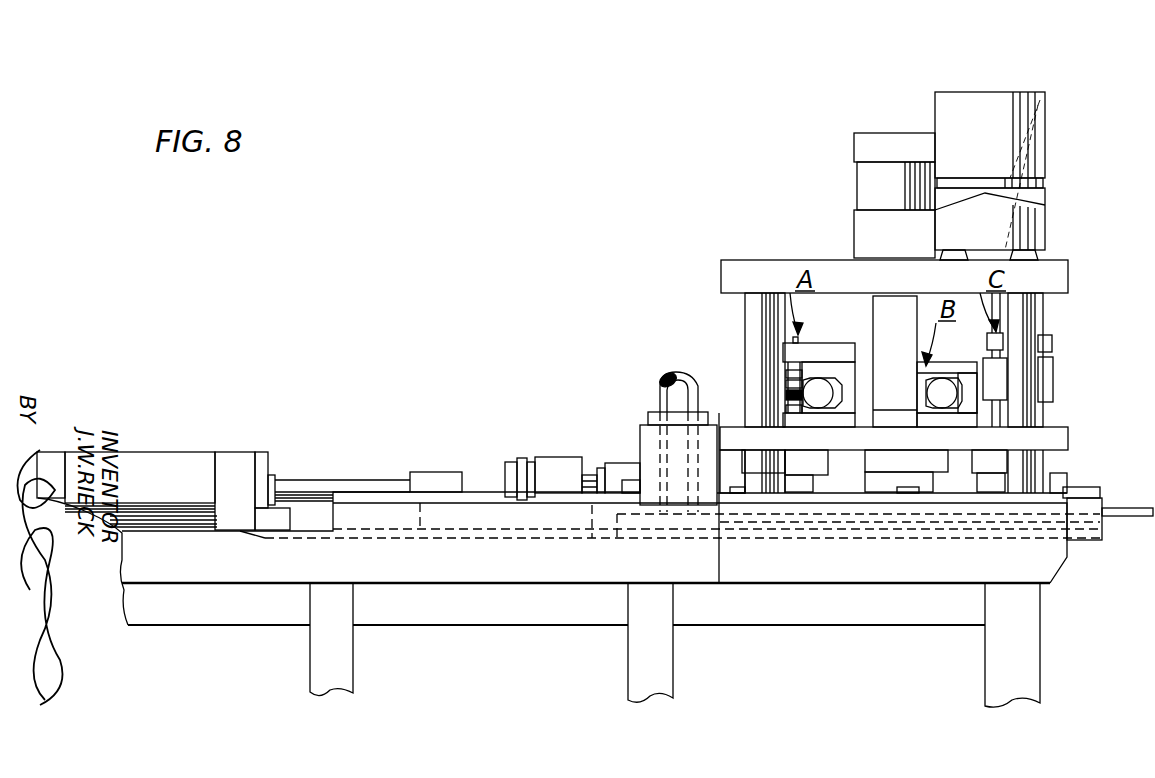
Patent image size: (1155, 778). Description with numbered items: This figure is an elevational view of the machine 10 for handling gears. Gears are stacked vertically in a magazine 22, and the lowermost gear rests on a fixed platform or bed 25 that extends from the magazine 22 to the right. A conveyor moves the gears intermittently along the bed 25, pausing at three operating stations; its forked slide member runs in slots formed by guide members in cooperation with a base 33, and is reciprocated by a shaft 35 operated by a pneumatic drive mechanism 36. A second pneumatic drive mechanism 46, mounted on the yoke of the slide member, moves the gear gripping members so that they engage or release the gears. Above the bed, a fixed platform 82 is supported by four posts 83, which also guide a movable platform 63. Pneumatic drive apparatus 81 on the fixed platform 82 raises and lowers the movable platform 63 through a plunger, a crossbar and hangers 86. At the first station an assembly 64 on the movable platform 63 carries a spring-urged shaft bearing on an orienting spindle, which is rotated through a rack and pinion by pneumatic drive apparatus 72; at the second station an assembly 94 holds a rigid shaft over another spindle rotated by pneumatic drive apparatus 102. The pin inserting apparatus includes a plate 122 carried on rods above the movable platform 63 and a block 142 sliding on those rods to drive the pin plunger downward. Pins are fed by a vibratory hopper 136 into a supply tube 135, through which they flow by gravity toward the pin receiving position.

The machine 10 is at (338, 455).
The magazine 22 is at (672, 397).
The fixed platform or bed 25 is at (830, 513).
The base 33 is at (537, 560).
The shaft 35 is at (360, 485).
The pneumatic drive mechanism 36 is at (157, 472).
The pneumatic drive mechanism 46 is at (561, 455).
The movable platform 63 is at (1055, 433).
The assembly 64 is at (843, 362).
The pneumatic drive apparatus 72 is at (818, 385).
The pneumatic drive apparatus 81 is at (885, 148).
The fixed platform 82 is at (762, 272).
The posts 83 is at (758, 350).
The hangers 86 is at (910, 325).
The assembly 94 is at (965, 403).
The pneumatic drive apparatus 102 is at (942, 385).
The plate 122 is at (1050, 343).
The supply tube 135 is at (1042, 158).
The vibratory hopper 136 is at (966, 108).
The block 142 is at (1053, 378).